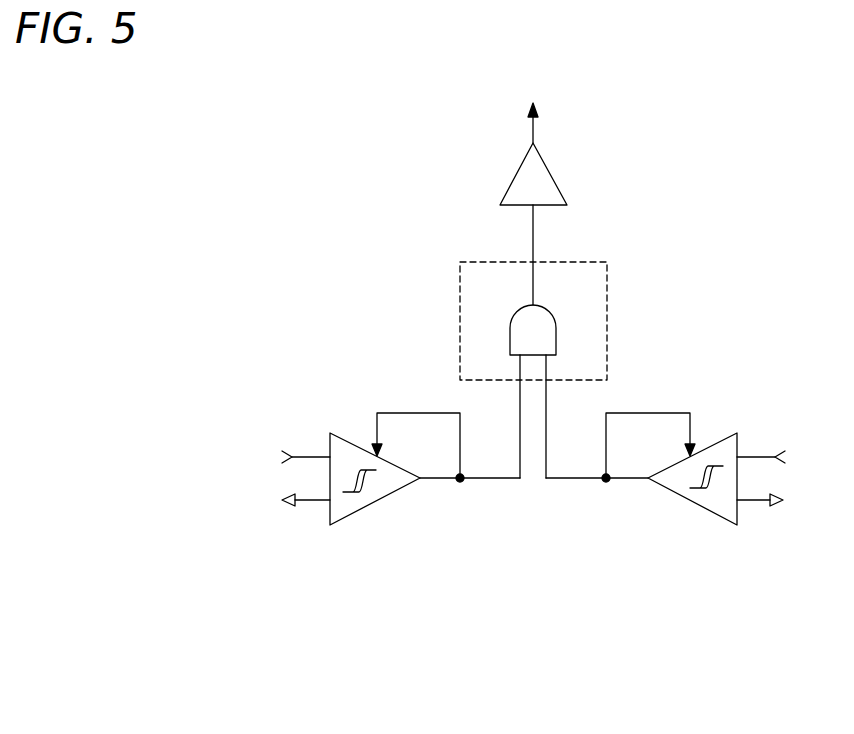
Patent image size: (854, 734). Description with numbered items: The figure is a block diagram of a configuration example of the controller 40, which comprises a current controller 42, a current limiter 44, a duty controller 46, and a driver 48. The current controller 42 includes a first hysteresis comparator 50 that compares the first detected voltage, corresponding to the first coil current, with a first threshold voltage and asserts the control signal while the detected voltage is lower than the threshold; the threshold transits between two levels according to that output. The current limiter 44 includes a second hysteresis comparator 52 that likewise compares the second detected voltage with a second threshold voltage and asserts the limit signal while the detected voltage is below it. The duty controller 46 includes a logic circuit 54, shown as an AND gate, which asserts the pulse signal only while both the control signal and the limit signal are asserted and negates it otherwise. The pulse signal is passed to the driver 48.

The controller 40 is at (552, 712).
The current controller 42 is at (592, 572).
The current limiter 44 is at (315, 572).
The duty controller 46 is at (607, 320).
The driver 48 is at (547, 165).
The first hysteresis comparator 50 is at (700, 505).
The second hysteresis comparator 52 is at (375, 505).
The logic circuit 54 is at (548, 311).